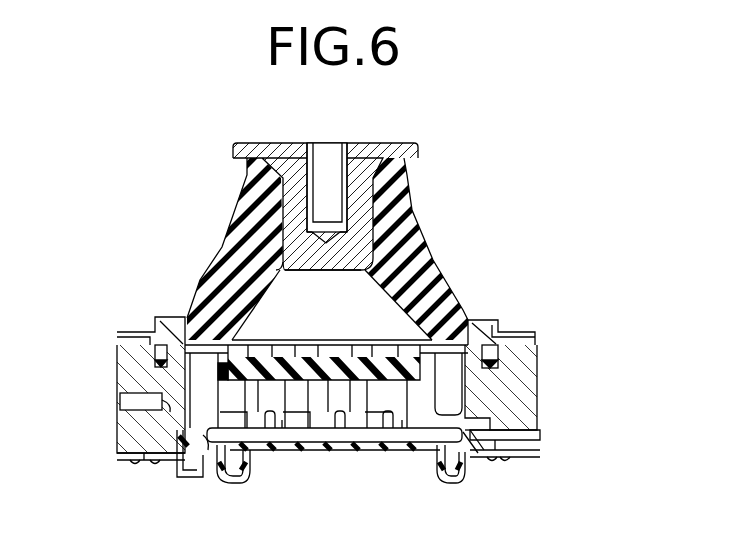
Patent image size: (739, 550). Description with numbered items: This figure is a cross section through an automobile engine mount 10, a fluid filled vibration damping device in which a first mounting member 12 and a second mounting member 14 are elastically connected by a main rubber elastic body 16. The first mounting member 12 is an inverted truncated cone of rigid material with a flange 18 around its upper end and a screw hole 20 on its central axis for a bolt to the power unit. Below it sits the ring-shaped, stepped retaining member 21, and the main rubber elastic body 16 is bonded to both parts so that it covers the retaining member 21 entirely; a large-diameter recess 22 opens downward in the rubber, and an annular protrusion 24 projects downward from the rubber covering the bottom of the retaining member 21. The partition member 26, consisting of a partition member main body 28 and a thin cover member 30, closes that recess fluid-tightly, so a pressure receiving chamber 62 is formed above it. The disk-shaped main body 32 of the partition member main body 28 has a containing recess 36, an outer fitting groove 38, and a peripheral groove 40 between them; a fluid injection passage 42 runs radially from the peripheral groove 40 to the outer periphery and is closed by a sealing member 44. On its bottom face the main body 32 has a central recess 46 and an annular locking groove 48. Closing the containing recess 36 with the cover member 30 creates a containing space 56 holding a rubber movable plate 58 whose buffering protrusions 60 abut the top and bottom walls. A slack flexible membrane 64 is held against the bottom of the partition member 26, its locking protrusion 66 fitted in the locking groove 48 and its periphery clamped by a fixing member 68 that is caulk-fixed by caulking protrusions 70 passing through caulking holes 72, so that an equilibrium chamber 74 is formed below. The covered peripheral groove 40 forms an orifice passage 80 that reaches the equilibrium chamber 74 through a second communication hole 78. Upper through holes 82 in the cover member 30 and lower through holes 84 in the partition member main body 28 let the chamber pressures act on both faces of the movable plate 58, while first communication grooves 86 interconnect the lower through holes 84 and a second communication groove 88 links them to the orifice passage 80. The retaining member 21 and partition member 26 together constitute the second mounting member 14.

The engine mount 10 is at (451, 183).
The first mounting member 12 is at (292, 212).
The second mounting member 14 is at (522, 324).
The main rubber elastic body 16 is at (410, 255).
The flange 18 is at (253, 152).
The screw hole 20 is at (336, 170).
The retaining member 21 is at (137, 338).
The large-diameter recess 22 is at (278, 268).
The annular protrusion 24 is at (492, 356).
The partition member 26 is at (232, 337).
The partition member main body 28 is at (545, 360).
The cover member 30 is at (215, 347).
The main body 32 is at (140, 432).
The containing recess 36 is at (420, 362).
The fitting groove 38 is at (160, 362).
The peripheral groove 40 is at (485, 433).
The fluid injection passage 42 is at (160, 408).
The sealing member 44 is at (140, 402).
The central recess 46 is at (434, 450).
The locking groove 48 is at (175, 445).
The containing space 56 is at (330, 445).
The movable plate 58 is at (318, 352).
The buffering protrusions 60 is at (300, 350).
The pressure receiving chamber 62 is at (316, 294).
The flexible membrane 64 is at (446, 462).
The locking protrusion 66 is at (490, 437).
The fixing member 68 is at (122, 456).
The caulking protrusions 70 is at (138, 453).
The caulking holes 72 is at (135, 458).
The equilibrium chamber 74 is at (233, 467).
The second communication hole 78 is at (196, 450).
The orifice passage 80 is at (446, 364).
The upper through holes 82 is at (236, 348).
The lower through holes 84 is at (282, 428).
The first communication groove 86 is at (377, 352).
The second communication groove 88 is at (266, 353).